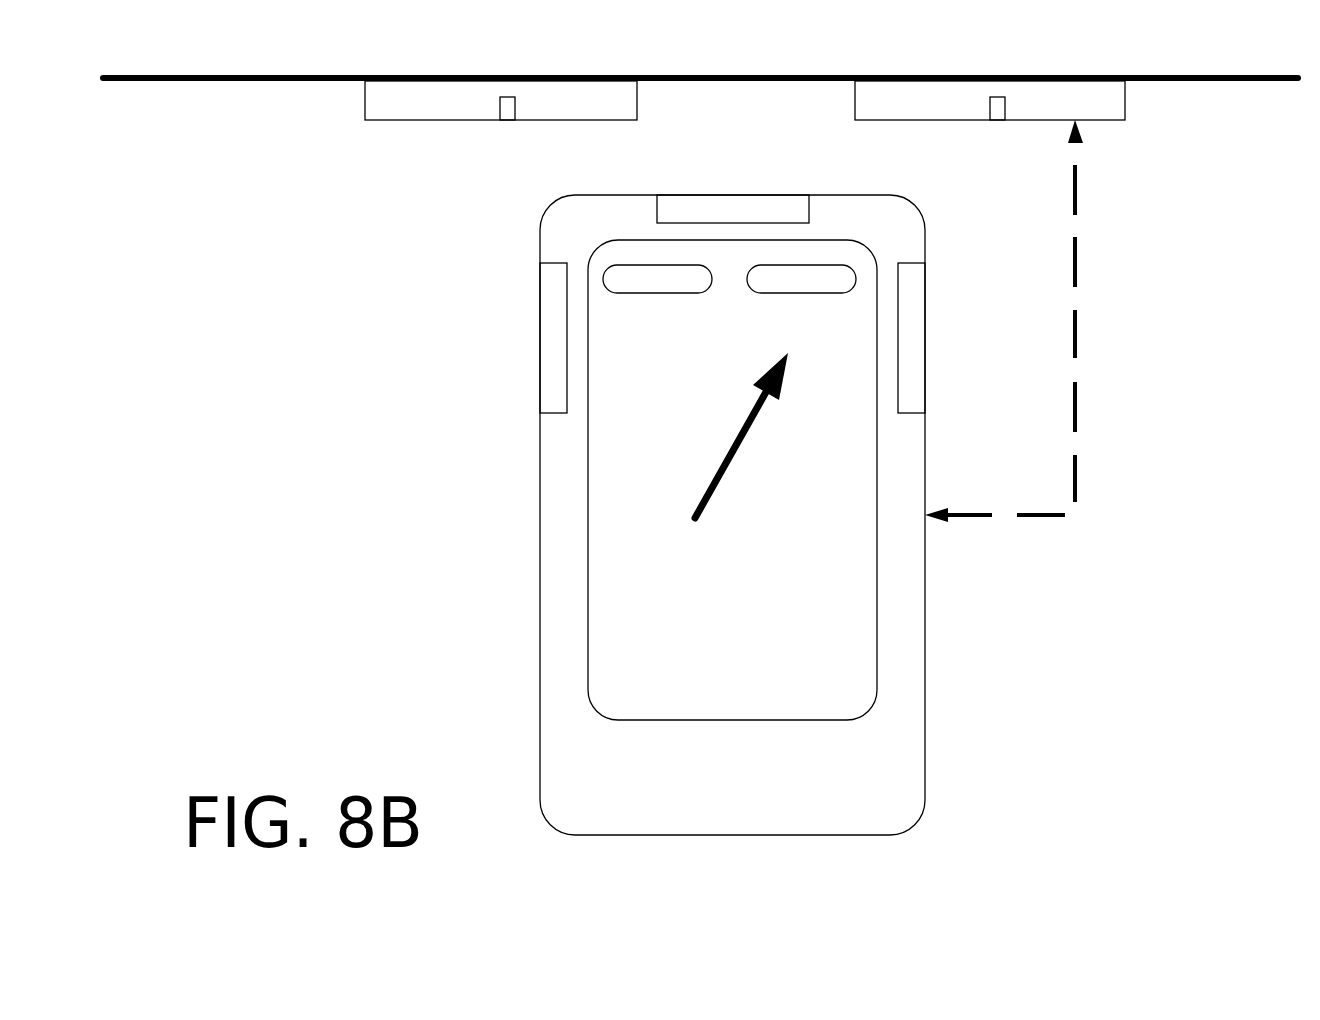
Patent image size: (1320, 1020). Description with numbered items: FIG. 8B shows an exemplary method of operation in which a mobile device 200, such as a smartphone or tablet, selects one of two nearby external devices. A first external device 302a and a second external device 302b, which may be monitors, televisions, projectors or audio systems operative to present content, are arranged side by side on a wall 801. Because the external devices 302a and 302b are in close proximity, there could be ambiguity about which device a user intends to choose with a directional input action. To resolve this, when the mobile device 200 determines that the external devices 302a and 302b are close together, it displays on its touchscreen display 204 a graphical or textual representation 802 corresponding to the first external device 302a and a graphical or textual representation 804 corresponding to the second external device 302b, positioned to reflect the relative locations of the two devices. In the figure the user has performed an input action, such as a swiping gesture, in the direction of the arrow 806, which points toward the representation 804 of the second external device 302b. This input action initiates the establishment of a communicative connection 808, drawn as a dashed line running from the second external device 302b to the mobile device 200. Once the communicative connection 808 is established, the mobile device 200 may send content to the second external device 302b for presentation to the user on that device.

The wall 801 is at (275, 82).
The first external device 302a is at (380, 122).
The second external device 302b is at (885, 122).
The mobile device 200 is at (549, 490).
The touchscreen display 204 is at (750, 604).
The graphical or textual representation 802 is at (698, 297).
The graphical or textual representation 804 is at (830, 297).
The arrow 806 is at (733, 458).
The communicative connection 808 is at (1075, 405).